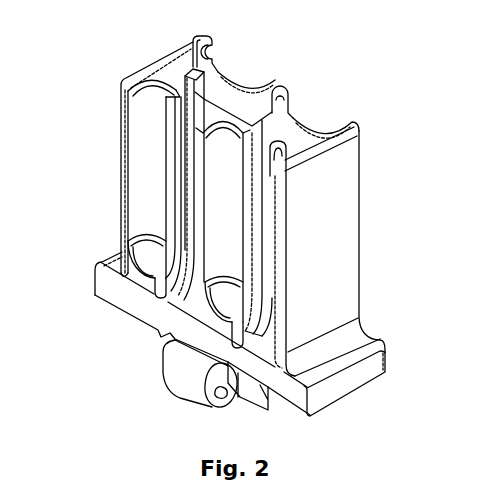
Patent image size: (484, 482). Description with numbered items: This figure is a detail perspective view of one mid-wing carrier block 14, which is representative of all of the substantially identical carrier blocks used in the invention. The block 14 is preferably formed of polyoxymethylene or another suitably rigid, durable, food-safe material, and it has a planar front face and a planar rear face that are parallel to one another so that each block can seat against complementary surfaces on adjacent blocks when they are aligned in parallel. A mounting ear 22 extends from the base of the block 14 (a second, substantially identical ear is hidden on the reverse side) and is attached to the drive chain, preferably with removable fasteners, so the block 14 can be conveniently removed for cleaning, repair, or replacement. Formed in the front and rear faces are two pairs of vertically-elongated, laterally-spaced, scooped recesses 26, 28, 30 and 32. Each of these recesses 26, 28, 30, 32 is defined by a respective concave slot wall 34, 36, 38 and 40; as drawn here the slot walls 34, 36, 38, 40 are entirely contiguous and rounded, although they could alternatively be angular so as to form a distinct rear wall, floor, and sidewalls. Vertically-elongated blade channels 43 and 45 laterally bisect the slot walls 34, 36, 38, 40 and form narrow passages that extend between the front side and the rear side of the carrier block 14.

The mid-wing carrier block 14 is at (358, 287).
The mounting ear 22 is at (185, 373).
The scooped recess 26 is at (132, 137).
The scooped recess 28 is at (208, 215).
The scooped recess 30 is at (258, 72).
The scooped recess 32 is at (283, 97).
The concave slot wall 34 is at (142, 182).
The concave slot wall 36 is at (225, 232).
The concave slot wall 38 is at (207, 57).
The concave slot wall 40 is at (325, 128).
The blade channel 43 is at (196, 81).
The blade channel 45 is at (284, 128).